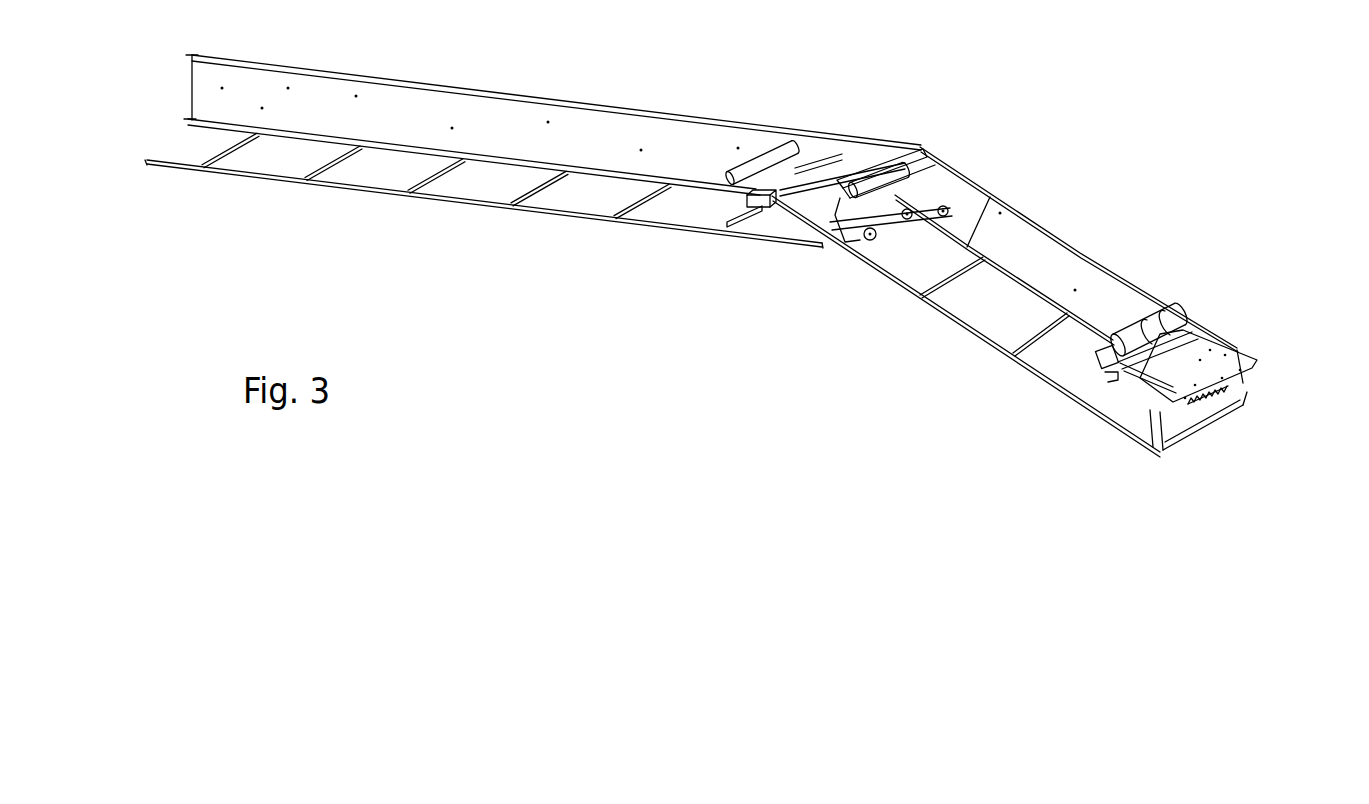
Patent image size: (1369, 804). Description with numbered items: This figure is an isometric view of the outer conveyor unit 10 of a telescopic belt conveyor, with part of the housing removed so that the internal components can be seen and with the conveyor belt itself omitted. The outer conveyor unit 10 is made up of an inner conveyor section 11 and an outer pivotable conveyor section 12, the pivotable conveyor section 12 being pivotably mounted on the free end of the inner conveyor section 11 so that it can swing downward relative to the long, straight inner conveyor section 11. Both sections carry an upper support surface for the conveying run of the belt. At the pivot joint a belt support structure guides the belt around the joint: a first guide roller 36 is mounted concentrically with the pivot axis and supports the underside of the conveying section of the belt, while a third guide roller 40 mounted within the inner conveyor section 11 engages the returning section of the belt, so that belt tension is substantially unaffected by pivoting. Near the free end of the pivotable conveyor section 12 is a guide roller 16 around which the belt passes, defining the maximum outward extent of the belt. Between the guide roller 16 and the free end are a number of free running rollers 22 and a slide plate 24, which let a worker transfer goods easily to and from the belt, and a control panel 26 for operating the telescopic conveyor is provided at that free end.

The outer conveyor unit 10 is at (428, 116).
The inner conveyor section 11 is at (608, 110).
The third guide roller 40 is at (777, 143).
The first guide roller 36 is at (917, 143).
The pivotable conveyor section 12 is at (1050, 258).
The guide roller 16 is at (1162, 322).
The free running rollers 22 is at (1193, 337).
The slide plate 24 is at (1255, 360).
The control panel 26 is at (1217, 400).